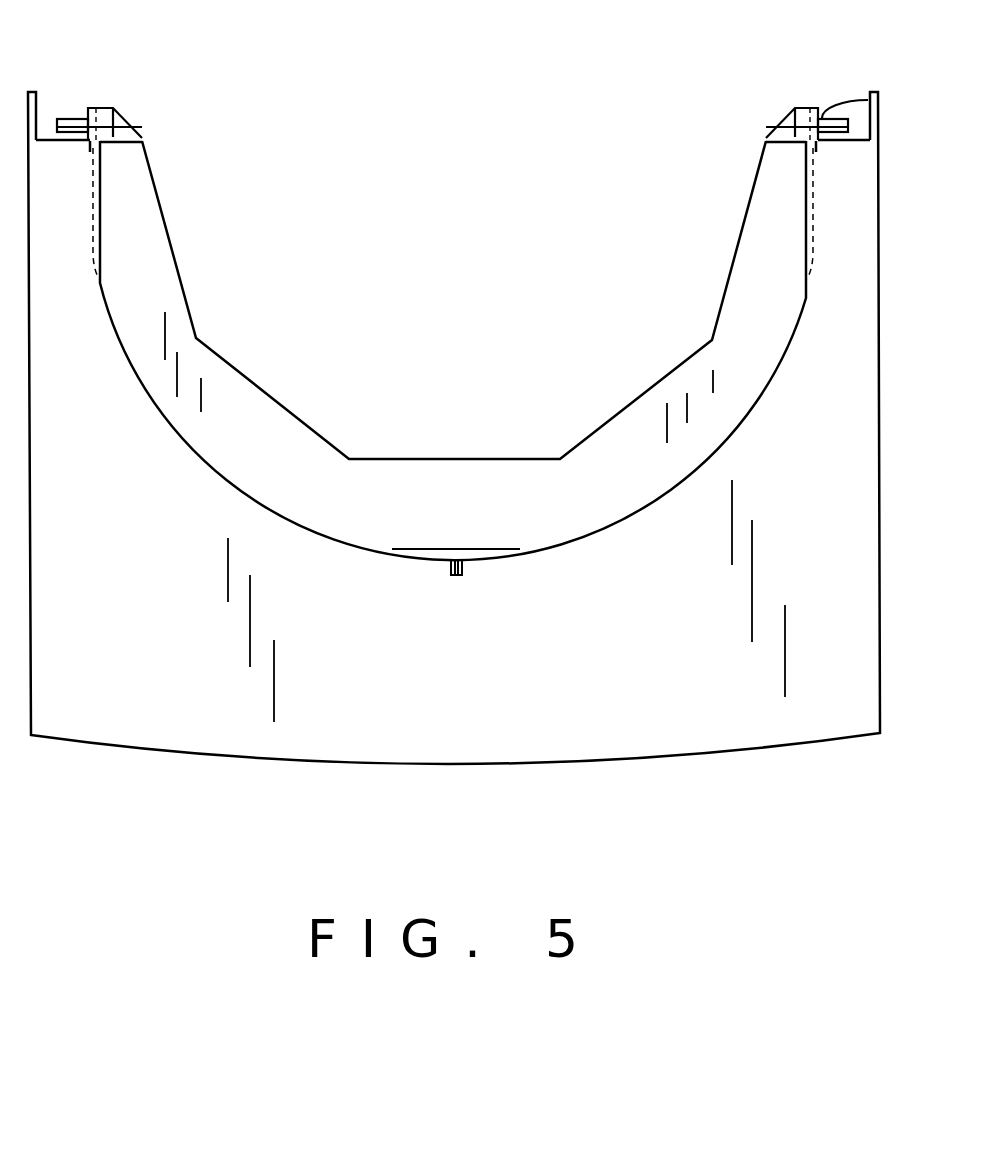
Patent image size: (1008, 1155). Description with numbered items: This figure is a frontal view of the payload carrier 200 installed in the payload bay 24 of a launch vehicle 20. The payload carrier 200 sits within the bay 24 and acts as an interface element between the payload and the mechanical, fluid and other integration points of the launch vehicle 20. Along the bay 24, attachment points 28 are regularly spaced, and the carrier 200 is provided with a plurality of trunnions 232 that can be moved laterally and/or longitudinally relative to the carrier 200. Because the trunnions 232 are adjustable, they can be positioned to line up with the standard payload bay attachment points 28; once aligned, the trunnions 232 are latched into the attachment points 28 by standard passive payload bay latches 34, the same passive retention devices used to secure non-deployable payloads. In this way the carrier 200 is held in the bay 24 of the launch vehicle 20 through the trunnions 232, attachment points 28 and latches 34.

The launch vehicle 20 is at (160, 596).
The launch vehicle payload bay 24 is at (148, 397).
The payload carrier 200 is at (660, 380).
The trunnions 232 is at (72, 118).
The attachment points 28 is at (37, 108).
The passive retention devices or latches 34 is at (847, 100).